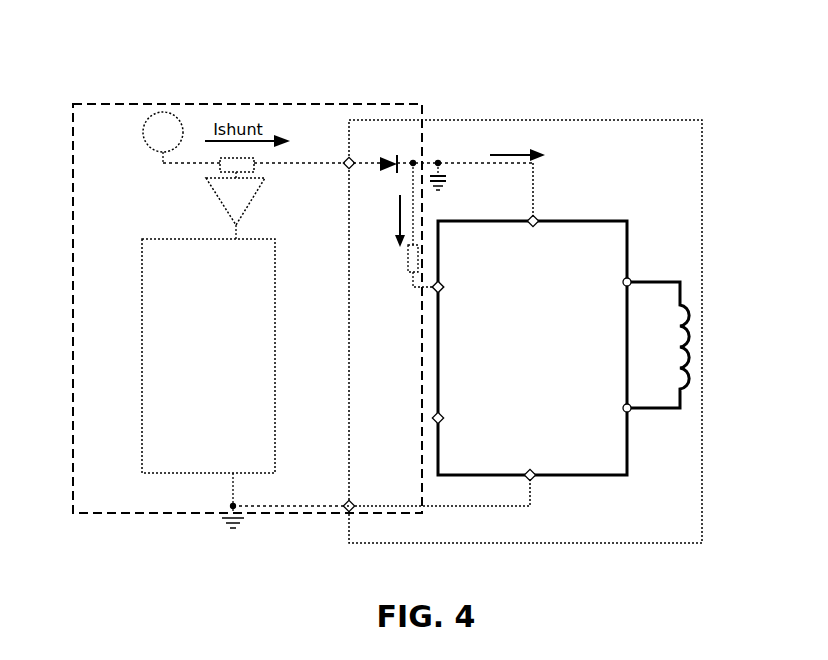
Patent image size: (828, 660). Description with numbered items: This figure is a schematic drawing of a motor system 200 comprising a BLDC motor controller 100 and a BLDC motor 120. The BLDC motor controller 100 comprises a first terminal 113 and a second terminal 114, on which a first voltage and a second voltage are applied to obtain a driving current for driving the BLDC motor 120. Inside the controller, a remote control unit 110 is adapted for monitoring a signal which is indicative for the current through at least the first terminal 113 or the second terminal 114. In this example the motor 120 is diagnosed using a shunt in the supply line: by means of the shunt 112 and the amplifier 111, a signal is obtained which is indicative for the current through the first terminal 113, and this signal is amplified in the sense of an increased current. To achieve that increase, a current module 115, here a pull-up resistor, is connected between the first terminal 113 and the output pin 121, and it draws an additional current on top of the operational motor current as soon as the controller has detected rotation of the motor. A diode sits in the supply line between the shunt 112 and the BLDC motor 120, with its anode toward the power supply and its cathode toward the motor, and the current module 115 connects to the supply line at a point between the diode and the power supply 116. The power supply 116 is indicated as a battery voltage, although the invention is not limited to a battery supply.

The motor system 200 is at (112, 71).
The BLDC motor controller 100 is at (73, 383).
The remote control unit 110 is at (141, 314).
The amplifier 111 is at (220, 200).
The shunt 112 is at (220, 160).
The first terminal 113 is at (346, 159).
The second terminal 114 is at (346, 502).
The current module 115 is at (406, 268).
The power supply 116 is at (143, 133).
The BLDC motor 120 is at (627, 245).
The output pin 121 is at (435, 291).